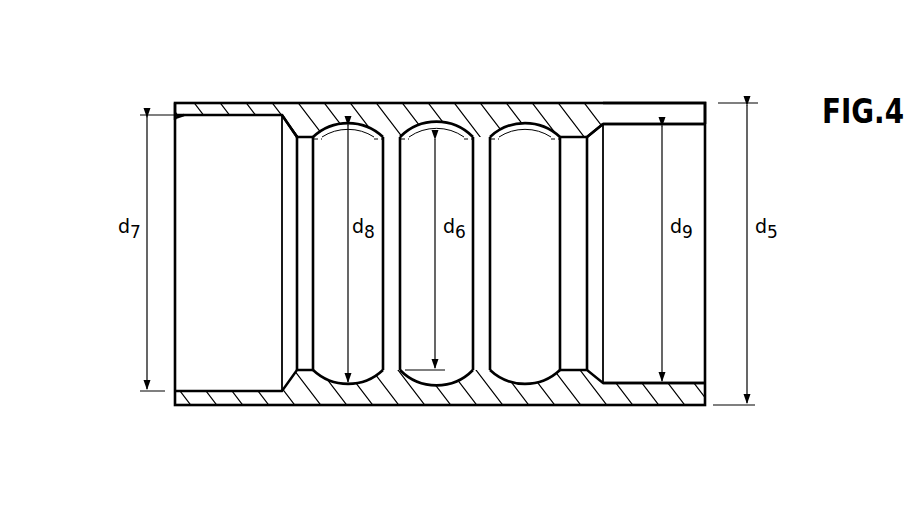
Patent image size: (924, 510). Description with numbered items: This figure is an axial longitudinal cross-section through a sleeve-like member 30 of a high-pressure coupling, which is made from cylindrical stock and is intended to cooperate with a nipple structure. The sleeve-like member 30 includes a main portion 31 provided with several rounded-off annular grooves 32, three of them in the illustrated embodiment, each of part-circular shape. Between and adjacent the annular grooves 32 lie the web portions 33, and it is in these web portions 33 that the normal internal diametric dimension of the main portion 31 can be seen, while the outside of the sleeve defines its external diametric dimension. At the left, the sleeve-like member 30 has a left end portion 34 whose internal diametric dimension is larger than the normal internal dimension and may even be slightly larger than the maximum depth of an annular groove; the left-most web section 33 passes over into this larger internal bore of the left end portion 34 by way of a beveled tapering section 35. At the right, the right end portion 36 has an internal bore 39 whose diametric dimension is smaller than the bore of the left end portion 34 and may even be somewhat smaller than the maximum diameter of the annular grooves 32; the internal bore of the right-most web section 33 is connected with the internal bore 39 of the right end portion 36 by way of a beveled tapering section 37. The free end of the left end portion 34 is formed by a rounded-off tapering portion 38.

The sleeve-like member 30 is at (463, 92).
The main portion 31 is at (438, 396).
The annular grooves 32 is at (407, 372).
The web portions 33 is at (311, 371).
The left end portion 34 is at (228, 102).
The beveled tapering section 35 is at (287, 136).
The right end portion 36 is at (678, 102).
The beveled tapering section 37 is at (596, 132).
The rounded-off tapering portion 38 is at (178, 116).
The internal bore 39 is at (623, 382).